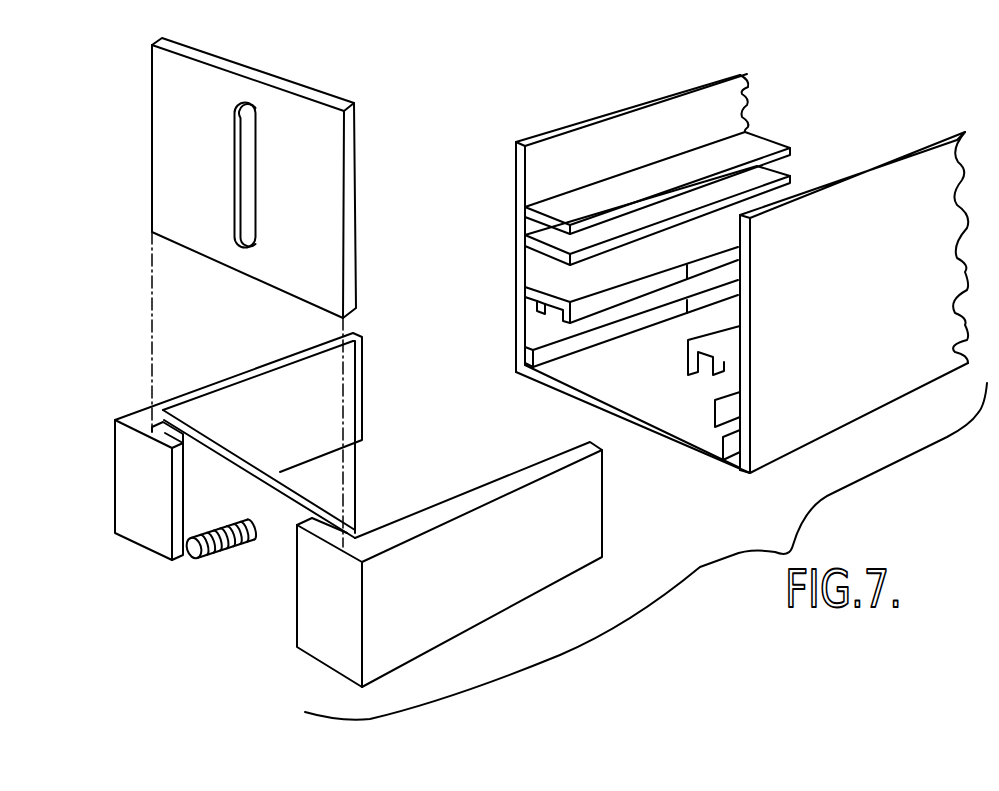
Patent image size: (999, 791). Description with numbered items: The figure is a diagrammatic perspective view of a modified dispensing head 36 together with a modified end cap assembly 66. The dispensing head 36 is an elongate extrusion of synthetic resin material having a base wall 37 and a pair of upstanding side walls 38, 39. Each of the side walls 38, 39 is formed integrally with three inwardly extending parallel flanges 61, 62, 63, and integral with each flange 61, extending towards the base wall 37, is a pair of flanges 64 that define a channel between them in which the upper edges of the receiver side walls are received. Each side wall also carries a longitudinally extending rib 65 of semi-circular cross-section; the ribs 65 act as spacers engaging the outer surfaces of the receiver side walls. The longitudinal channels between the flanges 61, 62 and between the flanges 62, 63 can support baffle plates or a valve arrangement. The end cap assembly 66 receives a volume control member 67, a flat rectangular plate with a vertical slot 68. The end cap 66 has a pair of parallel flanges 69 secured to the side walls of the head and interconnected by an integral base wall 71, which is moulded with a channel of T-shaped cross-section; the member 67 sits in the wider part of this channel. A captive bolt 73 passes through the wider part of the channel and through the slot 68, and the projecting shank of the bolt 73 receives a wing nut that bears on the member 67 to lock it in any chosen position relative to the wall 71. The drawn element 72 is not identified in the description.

The dispensing head 36 is at (672, 76).
The base wall 37 is at (595, 399).
The side wall 38 is at (748, 74).
The side wall 39 is at (607, 136).
The flange 61 is at (548, 293).
The flange 62 is at (540, 255).
The flange 63 is at (545, 222).
The flange 64 is at (543, 312).
The rib 65 is at (526, 316).
The end cap assembly 66 is at (366, 364).
The volume control member 67 is at (305, 182).
The vertical slot 68 is at (242, 128).
The flange 69 is at (305, 405).
The base wall 71 is at (228, 453).
The end block 72 is at (208, 460).
The captive bolt 73 is at (225, 548).